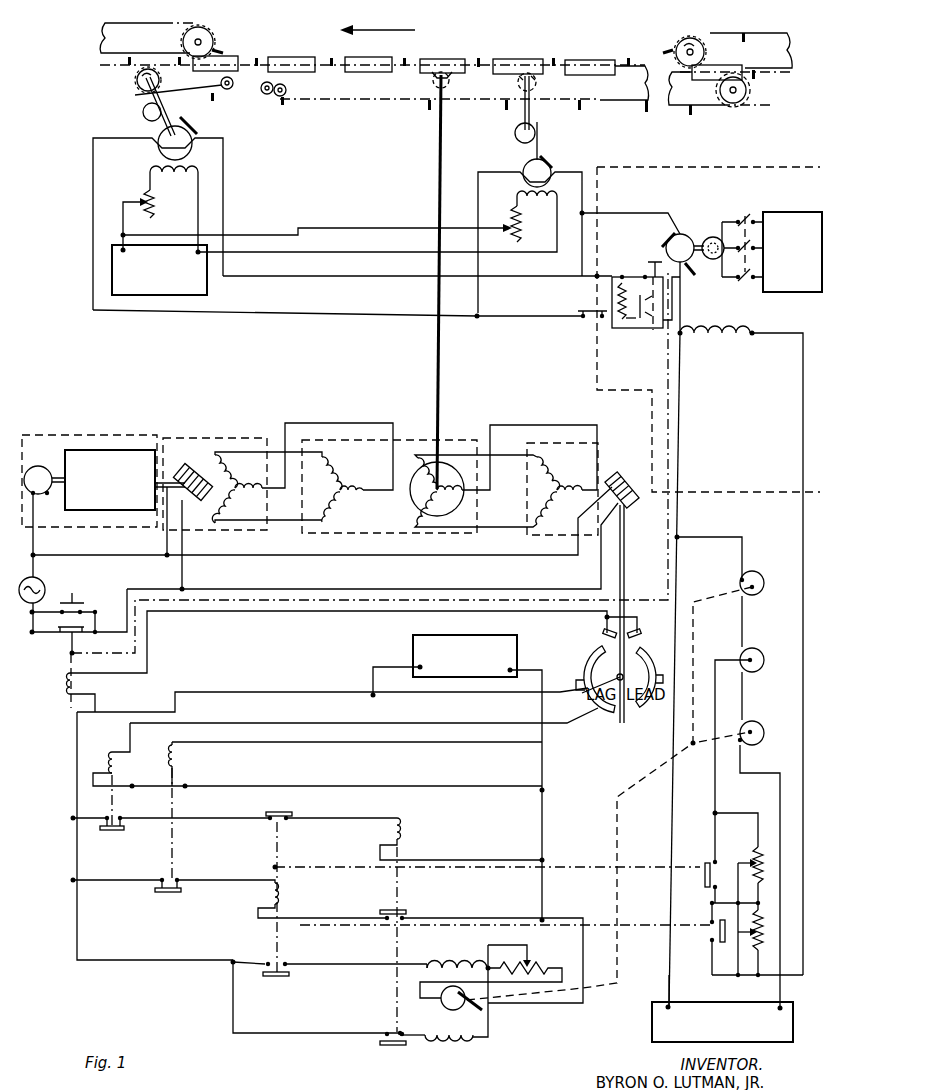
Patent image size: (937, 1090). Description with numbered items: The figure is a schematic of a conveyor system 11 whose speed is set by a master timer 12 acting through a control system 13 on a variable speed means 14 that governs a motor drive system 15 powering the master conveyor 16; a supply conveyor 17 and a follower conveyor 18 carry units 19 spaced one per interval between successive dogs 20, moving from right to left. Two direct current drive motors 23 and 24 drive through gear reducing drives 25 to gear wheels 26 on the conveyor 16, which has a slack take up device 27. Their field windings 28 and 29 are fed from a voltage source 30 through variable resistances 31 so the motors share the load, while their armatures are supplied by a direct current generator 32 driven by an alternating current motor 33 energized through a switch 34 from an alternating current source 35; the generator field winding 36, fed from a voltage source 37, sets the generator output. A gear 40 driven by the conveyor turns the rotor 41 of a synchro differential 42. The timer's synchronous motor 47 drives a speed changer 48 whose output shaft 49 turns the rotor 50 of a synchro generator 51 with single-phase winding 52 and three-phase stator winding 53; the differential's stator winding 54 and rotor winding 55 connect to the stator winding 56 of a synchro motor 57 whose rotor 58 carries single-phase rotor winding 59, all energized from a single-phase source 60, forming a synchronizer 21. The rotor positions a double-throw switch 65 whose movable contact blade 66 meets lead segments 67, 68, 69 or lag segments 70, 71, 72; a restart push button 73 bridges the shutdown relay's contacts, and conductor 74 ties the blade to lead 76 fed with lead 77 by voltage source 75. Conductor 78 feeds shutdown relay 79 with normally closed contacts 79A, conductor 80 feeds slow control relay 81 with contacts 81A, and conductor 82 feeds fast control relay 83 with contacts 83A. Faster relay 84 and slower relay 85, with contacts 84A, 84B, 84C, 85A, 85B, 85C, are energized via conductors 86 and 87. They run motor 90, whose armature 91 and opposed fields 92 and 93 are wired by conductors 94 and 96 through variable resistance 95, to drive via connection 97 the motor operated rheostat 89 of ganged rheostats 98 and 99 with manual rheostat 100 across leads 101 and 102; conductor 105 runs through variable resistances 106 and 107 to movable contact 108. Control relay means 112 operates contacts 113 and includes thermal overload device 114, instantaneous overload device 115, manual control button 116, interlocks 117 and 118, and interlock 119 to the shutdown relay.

The conveyor system 11 is at (515, 58).
The master timer 12 is at (65, 435).
The control system 13 is at (281, 671).
The variable speed means 14 is at (787, 628).
The motor drive system 15 is at (373, 186).
The conveyor 16 is at (420, 60).
The supply conveyor 17 is at (758, 36).
The follower conveyor 18 is at (178, 22).
The units 19 is at (583, 60).
The dogs 20 is at (480, 58).
The synchronizer 21 is at (441, 555).
The drive motor 23 is at (190, 127).
The drive motor 24 is at (550, 165).
The gear reducing drives 25 is at (143, 112).
The gear wheels 26 is at (135, 82).
The slack take up device 27 is at (286, 86).
The field winding 28 is at (188, 170).
The field winding 29 is at (537, 208).
The voltage source 30 is at (207, 290).
The variable resistances 31 is at (155, 206).
The direct current generator 32 is at (670, 236).
The alternating current motor 33 is at (708, 238).
The switch 34 is at (742, 216).
The alternating current source 35 is at (805, 212).
The field winding 36 is at (738, 328).
The voltage source 37 is at (652, 1035).
The gear 40 is at (433, 80).
The rotor 41 is at (443, 460).
The synchro differential 42 is at (362, 423).
The synchronous motor 47 is at (40, 466).
The speed changer 48 is at (105, 450).
The output shaft 49 is at (165, 478).
The rotor 50 is at (190, 462).
The synchro generator 51 is at (230, 438).
The single-phase winding 52 is at (200, 500).
The three-phase stator winding 53 is at (250, 488).
The three-phase stator winding 54 is at (335, 500).
The three-phase rotor winding 55 is at (418, 492).
The three-phase stator winding 56 is at (537, 498).
The synchro motor 57 is at (560, 443).
The rotor 58 is at (612, 472).
The single-phase rotor winding 59 is at (640, 480).
The single-phase source 60 is at (40, 580).
The double-throw switch 65 is at (640, 669).
The movable contact blade 66 is at (646, 677).
The contact segment 67 is at (648, 712).
The contact segment 68 is at (645, 652).
The contact segment 69 is at (643, 632).
The contact segment 70 is at (600, 715).
The contact segment 71 is at (592, 652).
The contact segment 72 is at (602, 634).
The restart push button 73 is at (82, 610).
The conductor 74 is at (603, 667).
The voltage source 75 is at (413, 650).
The lead 76 is at (73, 797).
The lead 77 is at (542, 772).
The conductor 78 is at (302, 615).
The shutdown relay 79 is at (63, 685).
The normally closed contacts 79A is at (60, 633).
The conductor 80 is at (348, 743).
The slow control relay 81 is at (178, 760).
The normally open contacts 81A is at (180, 880).
The conductor 82 is at (392, 720).
The fast control relay 83 is at (118, 762).
The normally open contacts 83A is at (122, 816).
The faster relay 84 is at (402, 826).
The normally closed contact 84A is at (410, 913).
The normally open contacts 84B is at (385, 1032).
The contact 84C is at (712, 922).
The slower relay 85 is at (282, 893).
The normally closed contact 85A is at (290, 816).
The normally open contacts 85B is at (287, 963).
The contact 85C is at (705, 862).
The conductor 86 is at (220, 818).
The conductor 87 is at (133, 880).
The motor operated rheostat 89 is at (764, 592).
The motor 90 is at (470, 1008).
The armature 91 is at (441, 999).
The slow down field 92 is at (438, 966).
The speed up field 93 is at (440, 1038).
The conductor 94 is at (350, 964).
The variable resistance 95 is at (540, 964).
The conductor 96 is at (325, 1033).
The output connection 97 is at (588, 988).
The rheostat 98 is at (752, 571).
The rheostat 99 is at (762, 742).
The manual rheostat 100 is at (762, 648).
The lead 101 is at (668, 968).
The lead 102 is at (780, 990).
The conductor 105 is at (803, 518).
The variable resistance 106 is at (755, 922).
The variable resistance 107 is at (755, 850).
The movable contact 108 is at (740, 655).
The control relay means 112 is at (640, 277).
The contacts 113 is at (583, 312).
The thermal overload device 114 is at (640, 320).
The instantaneous overload device 115 is at (615, 328).
The manual control button 116 is at (652, 262).
The interlock 117 is at (666, 165).
The interlock 118 is at (650, 388).
The interlock 119 is at (342, 592).